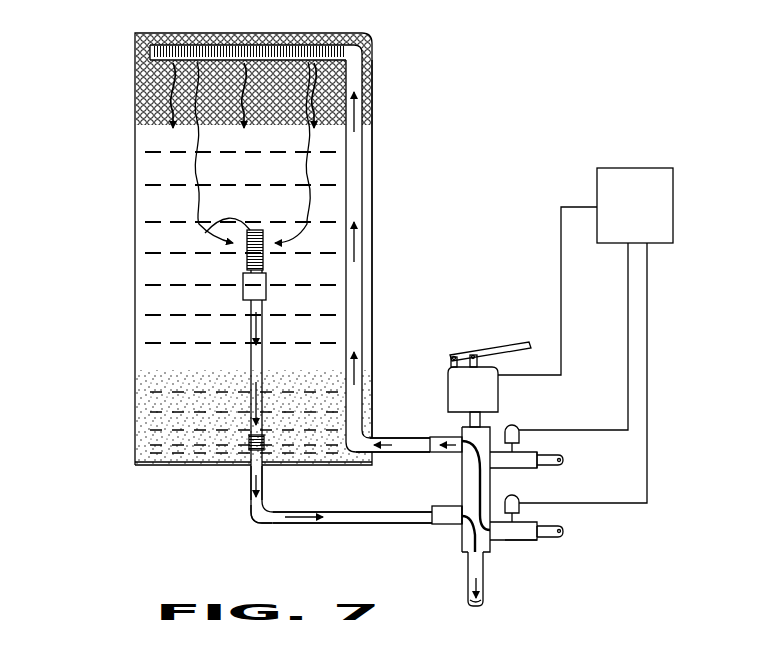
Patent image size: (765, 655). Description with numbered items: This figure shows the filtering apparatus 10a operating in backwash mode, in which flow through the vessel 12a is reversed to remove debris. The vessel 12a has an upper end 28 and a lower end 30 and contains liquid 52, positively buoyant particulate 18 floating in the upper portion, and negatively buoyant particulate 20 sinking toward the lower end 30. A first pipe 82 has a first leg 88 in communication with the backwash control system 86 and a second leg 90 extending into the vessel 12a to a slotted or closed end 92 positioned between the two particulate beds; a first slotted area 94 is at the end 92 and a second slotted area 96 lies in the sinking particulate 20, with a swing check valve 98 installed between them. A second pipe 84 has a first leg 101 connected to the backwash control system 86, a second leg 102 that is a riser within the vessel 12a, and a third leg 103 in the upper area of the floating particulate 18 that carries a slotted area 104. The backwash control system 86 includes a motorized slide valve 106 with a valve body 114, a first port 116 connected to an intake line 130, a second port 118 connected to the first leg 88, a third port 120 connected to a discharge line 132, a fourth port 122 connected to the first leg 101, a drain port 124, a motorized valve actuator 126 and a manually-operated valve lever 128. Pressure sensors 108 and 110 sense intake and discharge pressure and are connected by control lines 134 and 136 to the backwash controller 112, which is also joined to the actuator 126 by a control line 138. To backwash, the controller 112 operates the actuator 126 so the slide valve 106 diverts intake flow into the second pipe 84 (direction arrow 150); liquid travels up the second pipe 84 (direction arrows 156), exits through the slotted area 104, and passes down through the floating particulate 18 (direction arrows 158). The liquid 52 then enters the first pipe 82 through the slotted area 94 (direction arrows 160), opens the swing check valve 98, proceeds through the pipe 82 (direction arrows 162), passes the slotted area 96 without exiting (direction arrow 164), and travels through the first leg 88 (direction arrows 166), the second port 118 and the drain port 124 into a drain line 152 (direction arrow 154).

The filtering apparatus 10a is at (532, 100).
The vessel 12a is at (375, 166).
The positively buoyant particulate 18 is at (140, 118).
The negatively buoyant particulate 20 is at (150, 425).
The upper end 28 is at (142, 36).
The lower end 30 is at (140, 470).
The liquid 52 is at (150, 278).
The first pipe 82 is at (255, 527).
The second pipe 84 is at (364, 290).
The backwash control system 86 is at (500, 282).
The first leg 88 is at (360, 526).
The second leg 90 is at (248, 357).
The slotted or closed end 92 is at (244, 236).
The first slotted area 94 is at (244, 262).
The second slotted area 96 is at (250, 470).
The swing check valve 98 is at (242, 288).
The first leg 101 is at (460, 445).
The second leg 102 is at (370, 152).
The third leg 103 is at (306, 38).
The slotted area 104 is at (258, 40).
The motorized slide valve 106 is at (493, 426).
The pressure sensor 108 is at (545, 508).
The pressure sensor 110 is at (519, 430).
The backwash controller 112 is at (655, 168).
The valve body 114 is at (462, 490).
The first port 116 is at (502, 541).
The second port 118 is at (450, 525).
The third port 120 is at (522, 468).
The fourth port 122 is at (448, 438).
The drain port 124 is at (468, 576).
The motorized valve actuator 126 is at (492, 367).
The manually-operated valve lever 128 is at (497, 355).
The intake line 130 is at (563, 538).
The discharge line 132 is at (556, 452).
The control line 134 is at (649, 275).
The control line 136 is at (630, 322).
The control line 138 is at (561, 225).
The direction arrow 150 is at (517, 542).
The drain line 152 is at (485, 596).
The direction arrow 154 is at (463, 538).
The direction arrows 156 is at (365, 112).
The direction arrows 158 is at (231, 58).
The direction arrows 160 is at (192, 215).
The direction arrows 162 is at (250, 392).
The direction arrow 164 is at (252, 486).
The direction arrows 166 is at (385, 512).